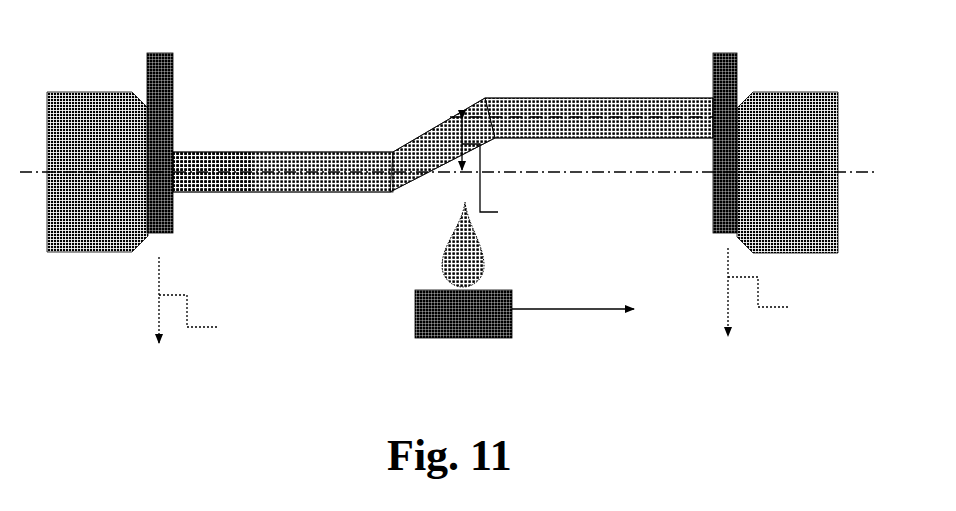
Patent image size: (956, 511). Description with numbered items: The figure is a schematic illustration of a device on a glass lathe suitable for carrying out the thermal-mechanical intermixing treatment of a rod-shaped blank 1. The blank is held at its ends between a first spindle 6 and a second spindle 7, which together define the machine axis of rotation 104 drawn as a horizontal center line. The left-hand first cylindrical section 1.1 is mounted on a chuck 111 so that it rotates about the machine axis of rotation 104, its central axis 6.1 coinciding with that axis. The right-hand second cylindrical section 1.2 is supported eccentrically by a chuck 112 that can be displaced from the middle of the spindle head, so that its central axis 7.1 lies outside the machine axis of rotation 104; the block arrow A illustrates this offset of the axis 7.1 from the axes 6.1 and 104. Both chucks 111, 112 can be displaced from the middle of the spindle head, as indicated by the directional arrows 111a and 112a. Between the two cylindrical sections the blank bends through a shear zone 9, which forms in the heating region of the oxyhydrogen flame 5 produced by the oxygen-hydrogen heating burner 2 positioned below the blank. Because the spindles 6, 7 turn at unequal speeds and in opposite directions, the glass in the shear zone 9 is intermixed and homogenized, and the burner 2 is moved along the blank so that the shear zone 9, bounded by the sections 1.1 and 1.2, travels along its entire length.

The rod-shaped blank 1 is at (357, 132).
The first cylindrical section 1.1 is at (272, 185).
The second cylindrical section 1.2 is at (523, 102).
The oxygen-hydrogen heating burner 2 is at (413, 317).
The oxyhydrogen flame 5 is at (442, 256).
The first spindle 6 is at (100, 127).
The central axis of the first cylindrical section 6.1 is at (238, 171).
The second spindle 7 is at (795, 108).
The central axis of the second cylindrical section 7.1 is at (607, 117).
The shear zone 9 is at (426, 126).
The machine axis of rotation 104 is at (623, 174).
The chuck 111 is at (164, 64).
The directional arrow 111a is at (217, 300).
The chuck 112 is at (717, 61).
The directional arrow 112a is at (786, 292).
The block arrow A is at (491, 170).